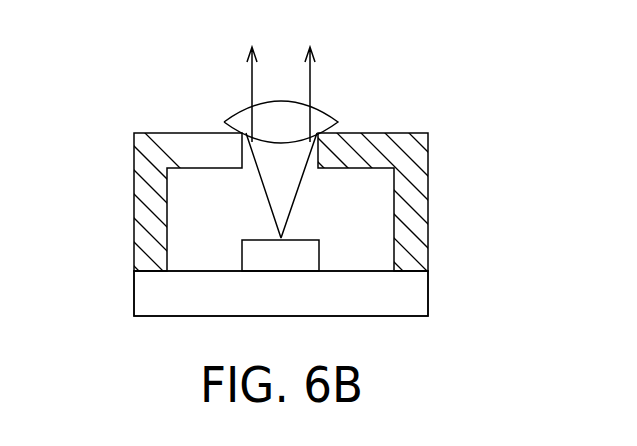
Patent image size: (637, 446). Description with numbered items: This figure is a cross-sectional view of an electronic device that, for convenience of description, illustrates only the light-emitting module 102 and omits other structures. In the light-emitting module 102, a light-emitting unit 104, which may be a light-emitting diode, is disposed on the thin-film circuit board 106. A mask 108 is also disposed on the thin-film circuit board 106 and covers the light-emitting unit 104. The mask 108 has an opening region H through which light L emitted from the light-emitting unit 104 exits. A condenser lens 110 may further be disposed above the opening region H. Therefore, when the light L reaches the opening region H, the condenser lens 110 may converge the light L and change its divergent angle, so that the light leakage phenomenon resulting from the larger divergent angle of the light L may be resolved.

The light-emitting module 102 is at (114, 19).
The light-emitting unit 104 is at (253, 256).
The thin-film circuit board 106 is at (146, 297).
The mask 108 is at (150, 147).
The condenser lens 110 is at (320, 116).
The light L is at (282, 124).
The opening region H is at (317, 182).